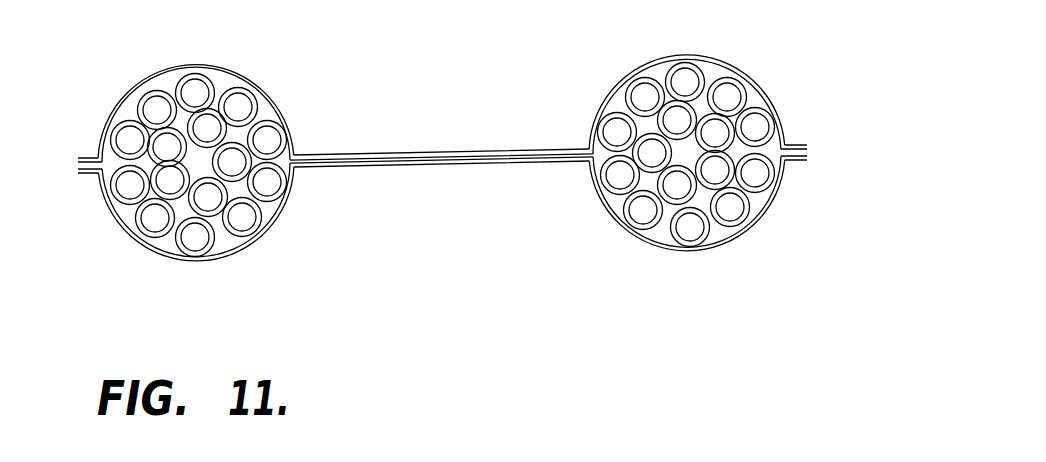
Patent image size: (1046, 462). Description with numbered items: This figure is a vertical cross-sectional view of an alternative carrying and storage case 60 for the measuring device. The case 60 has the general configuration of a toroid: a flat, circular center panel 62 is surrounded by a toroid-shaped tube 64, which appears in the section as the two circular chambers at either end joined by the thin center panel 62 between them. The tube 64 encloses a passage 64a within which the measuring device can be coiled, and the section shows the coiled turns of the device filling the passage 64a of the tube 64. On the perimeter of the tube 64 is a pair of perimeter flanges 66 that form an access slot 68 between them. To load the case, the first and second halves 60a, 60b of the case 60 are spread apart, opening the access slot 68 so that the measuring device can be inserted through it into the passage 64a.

The dual-chamber flexible housing assembly 60 is at (775, 50).
The upper wall of connecting section 60a is at (320, 154).
The lower wall of connecting section 60b is at (398, 165).
The connecting section 62 is at (456, 164).
The cylindrical housing body 64 is at (729, 243).
The tubular conduits 64a is at (757, 193).
The right tab 66 is at (807, 146).
The left tab 68 is at (95, 178).